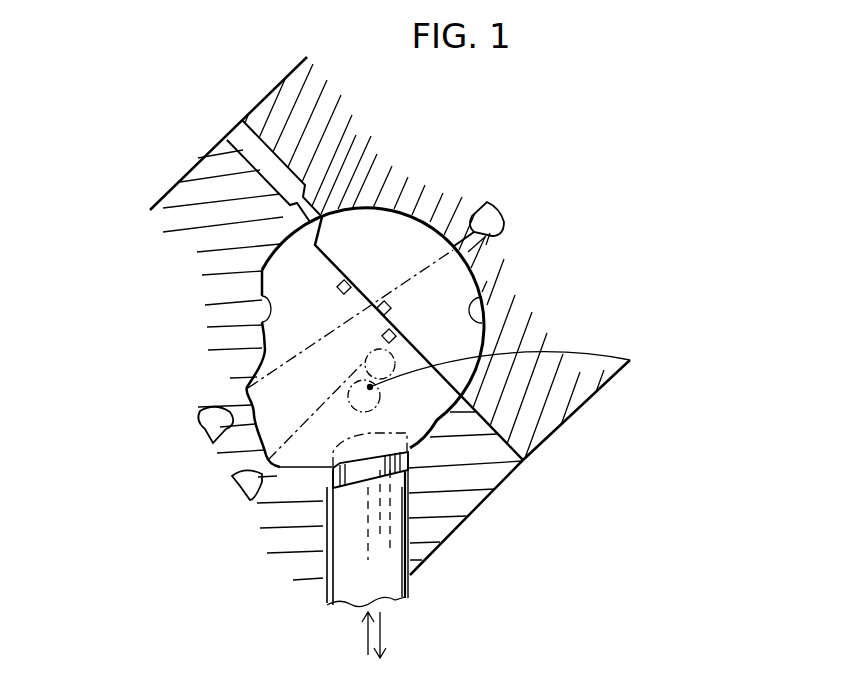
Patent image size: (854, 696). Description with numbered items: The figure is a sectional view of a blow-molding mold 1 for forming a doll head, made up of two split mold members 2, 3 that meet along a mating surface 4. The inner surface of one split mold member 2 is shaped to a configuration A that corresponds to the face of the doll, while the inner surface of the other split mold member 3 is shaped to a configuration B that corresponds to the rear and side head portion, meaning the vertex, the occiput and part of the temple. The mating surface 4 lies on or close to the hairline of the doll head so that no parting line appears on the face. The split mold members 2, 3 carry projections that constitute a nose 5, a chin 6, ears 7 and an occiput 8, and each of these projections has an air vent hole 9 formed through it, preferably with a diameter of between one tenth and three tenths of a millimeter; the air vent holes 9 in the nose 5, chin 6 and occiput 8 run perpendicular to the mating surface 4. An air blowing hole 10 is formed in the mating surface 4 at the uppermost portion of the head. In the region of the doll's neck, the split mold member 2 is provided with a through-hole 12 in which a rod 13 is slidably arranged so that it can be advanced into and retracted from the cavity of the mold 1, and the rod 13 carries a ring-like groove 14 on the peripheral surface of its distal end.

The mold 1 is at (176, 154).
The split mold member 2 is at (153, 208).
The split mold member 3 is at (270, 92).
The mating surface 4 is at (332, 257).
The nose 5 is at (243, 390).
The chin 6 is at (272, 488).
The ears 7 is at (632, 358).
The occiput 8 is at (475, 248).
The air vent hole 9 is at (457, 238).
The air blowing hole 10 is at (277, 167).
The through-hole 12 is at (325, 590).
The rod 13 is at (410, 553).
The ring-like groove 14 is at (410, 507).
The configuration A is at (258, 292).
The configuration B is at (488, 292).